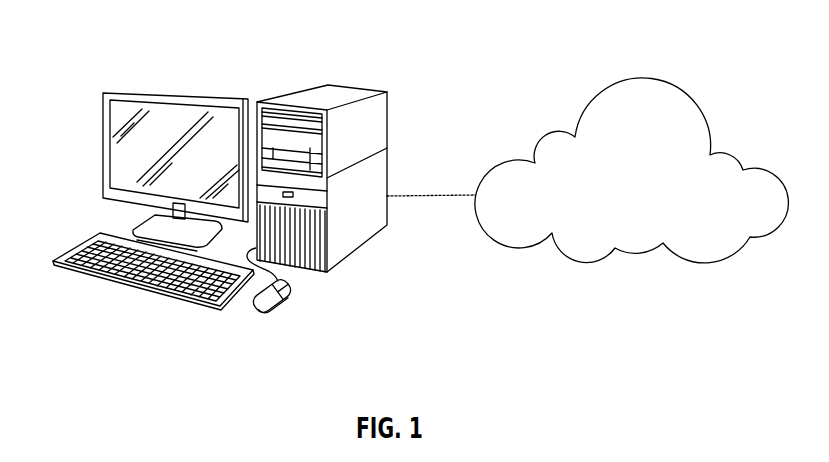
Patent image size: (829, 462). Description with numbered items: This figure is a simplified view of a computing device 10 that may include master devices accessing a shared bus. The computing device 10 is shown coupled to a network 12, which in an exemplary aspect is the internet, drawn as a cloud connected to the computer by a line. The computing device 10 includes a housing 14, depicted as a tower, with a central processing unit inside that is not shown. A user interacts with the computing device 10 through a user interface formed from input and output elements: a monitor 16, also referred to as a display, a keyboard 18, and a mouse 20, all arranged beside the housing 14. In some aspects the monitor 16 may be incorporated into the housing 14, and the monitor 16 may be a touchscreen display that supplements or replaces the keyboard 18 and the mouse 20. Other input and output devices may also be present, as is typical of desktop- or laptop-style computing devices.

The computing device 10 is at (80, 75).
The network 12 is at (647, 253).
The housing 14 is at (387, 137).
The monitor 16 is at (212, 97).
The keyboard 18 is at (95, 277).
The mouse 20 is at (290, 292).